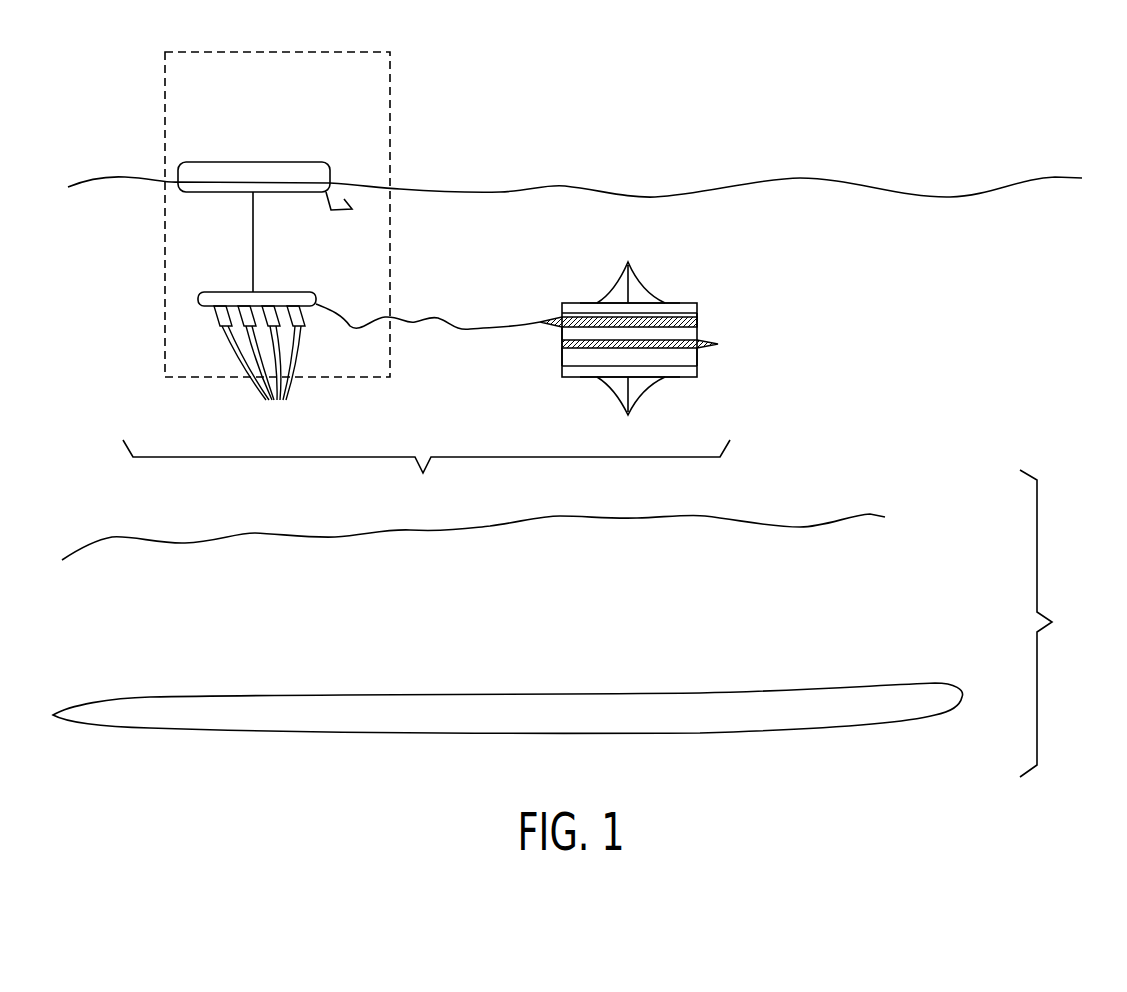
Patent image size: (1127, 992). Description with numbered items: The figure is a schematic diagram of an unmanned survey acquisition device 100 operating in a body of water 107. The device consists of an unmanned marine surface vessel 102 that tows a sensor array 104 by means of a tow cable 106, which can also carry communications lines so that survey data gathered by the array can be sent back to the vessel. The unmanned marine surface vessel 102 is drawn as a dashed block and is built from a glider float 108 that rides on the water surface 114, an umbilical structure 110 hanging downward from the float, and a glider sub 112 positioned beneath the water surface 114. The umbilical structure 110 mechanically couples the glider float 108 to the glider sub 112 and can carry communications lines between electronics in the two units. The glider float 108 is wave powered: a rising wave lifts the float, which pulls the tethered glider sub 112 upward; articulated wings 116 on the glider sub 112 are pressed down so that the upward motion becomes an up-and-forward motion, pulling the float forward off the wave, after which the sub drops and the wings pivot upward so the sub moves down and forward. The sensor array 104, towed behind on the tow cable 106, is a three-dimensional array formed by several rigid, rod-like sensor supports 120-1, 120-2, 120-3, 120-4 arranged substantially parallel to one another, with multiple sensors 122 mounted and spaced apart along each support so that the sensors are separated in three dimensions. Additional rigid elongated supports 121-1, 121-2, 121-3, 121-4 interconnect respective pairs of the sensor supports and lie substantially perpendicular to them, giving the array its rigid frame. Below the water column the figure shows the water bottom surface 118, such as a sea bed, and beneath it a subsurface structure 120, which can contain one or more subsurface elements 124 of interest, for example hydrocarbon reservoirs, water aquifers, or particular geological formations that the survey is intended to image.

The unmanned survey acquisition device 100 is at (426, 474).
The unmanned marine surface vessel 102 is at (276, 52).
The sensor array 104 is at (716, 329).
The tow cable 106 is at (436, 318).
The body of water 107 is at (881, 391).
The glider float 108 is at (213, 162).
The umbilical structure 110 is at (256, 240).
The glider sub 112 is at (218, 292).
The water surface 114 is at (578, 185).
The articulated wings 116 is at (261, 378).
The water bottom surface 118 is at (637, 518).
The subsurface structure 120 is at (1061, 623).
The sensor support 120-1 is at (665, 302).
The sensor support 120-2 is at (555, 320).
The sensor support 120-3 is at (698, 367).
The sensor support 120-4 is at (682, 378).
The rigid elongated support 121-1 is at (560, 333).
The rigid elongated support 121-2 is at (700, 318).
The rigid elongated support 121-3 is at (563, 358).
The rigid elongated support 121-4 is at (700, 353).
The sensors 122 is at (628, 263).
The subsurface element 124 is at (507, 709).